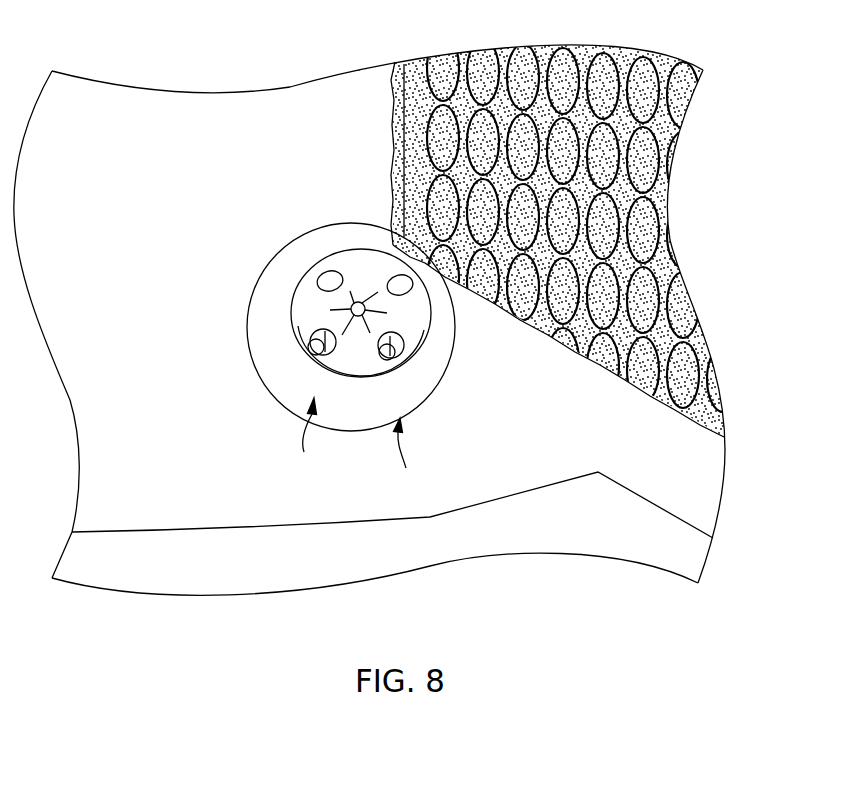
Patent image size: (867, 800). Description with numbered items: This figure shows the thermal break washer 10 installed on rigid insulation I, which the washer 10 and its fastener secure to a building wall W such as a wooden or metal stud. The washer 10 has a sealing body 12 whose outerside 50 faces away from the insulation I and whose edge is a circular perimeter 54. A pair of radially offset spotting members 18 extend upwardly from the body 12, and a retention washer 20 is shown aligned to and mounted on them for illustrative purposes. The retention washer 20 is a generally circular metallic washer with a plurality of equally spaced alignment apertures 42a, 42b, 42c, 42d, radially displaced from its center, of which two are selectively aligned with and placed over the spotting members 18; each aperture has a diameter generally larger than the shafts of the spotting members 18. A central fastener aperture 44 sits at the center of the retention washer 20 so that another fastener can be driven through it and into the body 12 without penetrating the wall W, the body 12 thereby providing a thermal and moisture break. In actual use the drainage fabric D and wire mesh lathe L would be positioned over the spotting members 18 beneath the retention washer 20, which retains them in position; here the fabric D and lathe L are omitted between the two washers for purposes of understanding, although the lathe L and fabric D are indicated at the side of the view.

The thermal break washer 10 is at (218, 184).
The sealing body 12 is at (351, 430).
The spotting members 18 is at (316, 335).
The retention washer 20 is at (419, 320).
The alignment aperture 42a is at (311, 346).
The alignment aperture 42b is at (404, 339).
The alignment aperture 42c is at (316, 281).
The alignment aperture 42d is at (409, 291).
The fastener aperture 44 is at (360, 301).
The outerside 50 is at (304, 435).
The circular perimeter 54 is at (407, 454).
The wire mesh lathe L is at (694, 341).
The drainage fabric D is at (707, 397).
The insulation I is at (713, 472).
The building wall W is at (385, 568).